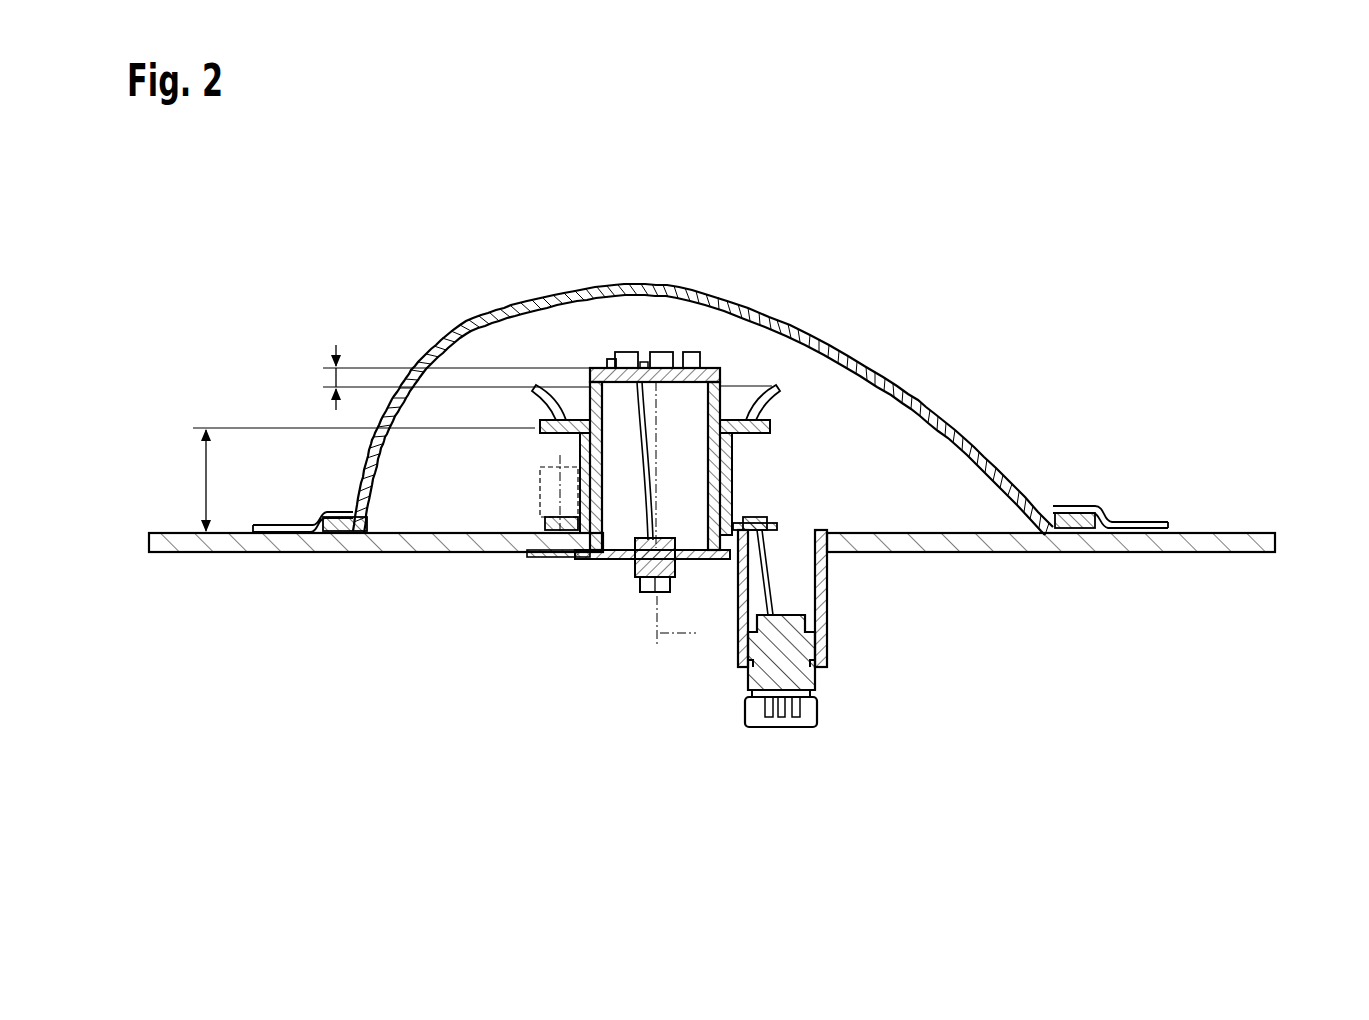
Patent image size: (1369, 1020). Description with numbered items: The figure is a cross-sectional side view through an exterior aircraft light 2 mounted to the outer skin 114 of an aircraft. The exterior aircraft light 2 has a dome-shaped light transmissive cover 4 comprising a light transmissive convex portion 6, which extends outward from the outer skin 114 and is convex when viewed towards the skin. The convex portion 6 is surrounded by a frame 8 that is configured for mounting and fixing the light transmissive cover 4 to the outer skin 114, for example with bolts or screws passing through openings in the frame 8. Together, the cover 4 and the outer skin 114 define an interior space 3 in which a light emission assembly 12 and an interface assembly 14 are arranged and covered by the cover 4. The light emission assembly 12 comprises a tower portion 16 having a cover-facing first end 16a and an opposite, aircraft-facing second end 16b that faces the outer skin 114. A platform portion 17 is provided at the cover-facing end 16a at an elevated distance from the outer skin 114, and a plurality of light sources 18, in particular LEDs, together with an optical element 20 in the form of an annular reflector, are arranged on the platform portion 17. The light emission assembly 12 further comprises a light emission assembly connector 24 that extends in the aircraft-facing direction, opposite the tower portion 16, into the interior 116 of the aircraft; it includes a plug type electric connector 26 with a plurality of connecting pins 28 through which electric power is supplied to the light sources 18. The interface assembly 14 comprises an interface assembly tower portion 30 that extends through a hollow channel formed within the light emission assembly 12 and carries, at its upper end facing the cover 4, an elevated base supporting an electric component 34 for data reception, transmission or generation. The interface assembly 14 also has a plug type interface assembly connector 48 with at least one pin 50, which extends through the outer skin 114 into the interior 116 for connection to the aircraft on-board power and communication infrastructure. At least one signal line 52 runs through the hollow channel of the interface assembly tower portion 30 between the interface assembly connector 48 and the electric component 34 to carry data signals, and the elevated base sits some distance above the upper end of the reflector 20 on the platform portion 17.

The exterior aircraft light 2 is at (712, 521).
The interior space 3 is at (712, 519).
The light transmissive cover 4 is at (703, 404).
The light transmissive convex portion 6 is at (701, 409).
The frame 8 is at (710, 485).
The light emission assembly 12 is at (623, 450).
The interface assembly 14 is at (656, 443).
The tower portion 16 is at (662, 463).
The first end 16a is at (533, 442).
The second end 16b is at (514, 484).
The platform portion 17 is at (835, 379).
The light sources 18 is at (654, 368).
The optical element 20 is at (579, 328).
The light emission assembly connector 24 is at (808, 667).
The electric connector 26 is at (744, 653).
The connecting pins 28 is at (779, 751).
The interface assembly tower portion 30 is at (829, 572).
The electric component 34 is at (653, 299).
The interface assembly connector 48 is at (605, 594).
The pin 50 is at (633, 634).
The signal line 52 is at (712, 395).
The outer skin 114 is at (376, 573).
The interior 116 is at (712, 590).